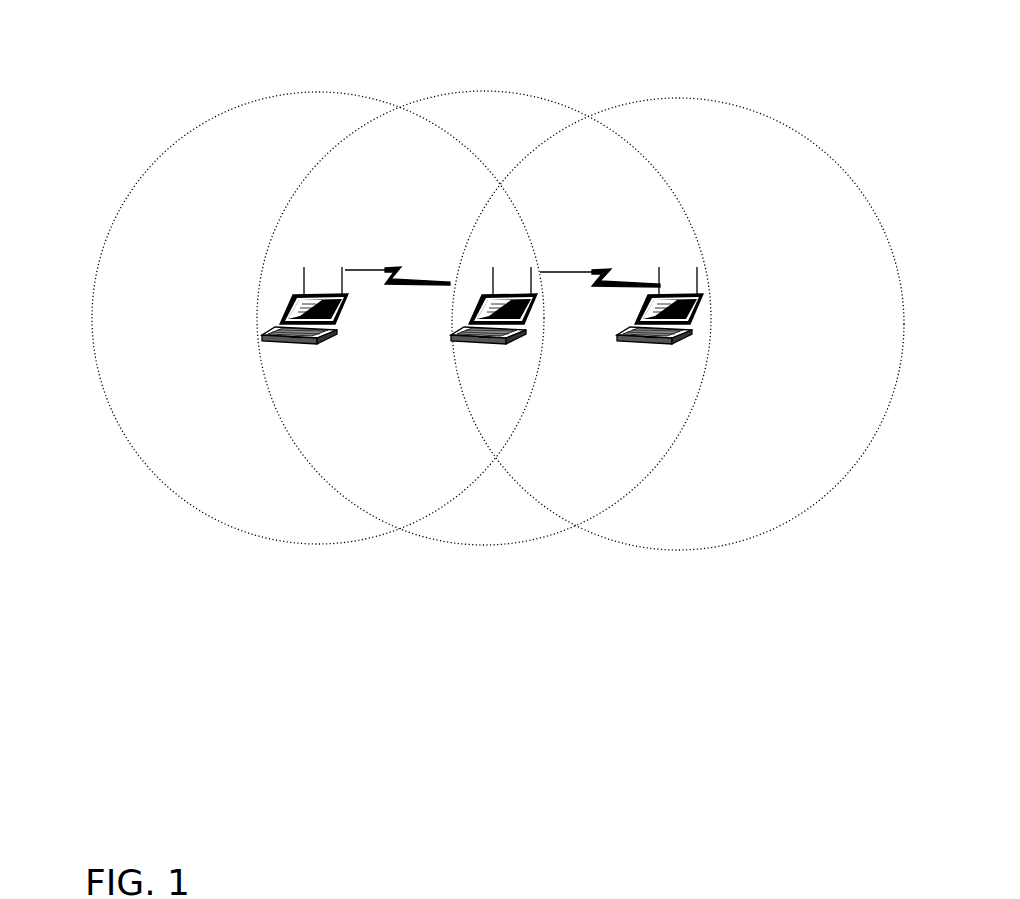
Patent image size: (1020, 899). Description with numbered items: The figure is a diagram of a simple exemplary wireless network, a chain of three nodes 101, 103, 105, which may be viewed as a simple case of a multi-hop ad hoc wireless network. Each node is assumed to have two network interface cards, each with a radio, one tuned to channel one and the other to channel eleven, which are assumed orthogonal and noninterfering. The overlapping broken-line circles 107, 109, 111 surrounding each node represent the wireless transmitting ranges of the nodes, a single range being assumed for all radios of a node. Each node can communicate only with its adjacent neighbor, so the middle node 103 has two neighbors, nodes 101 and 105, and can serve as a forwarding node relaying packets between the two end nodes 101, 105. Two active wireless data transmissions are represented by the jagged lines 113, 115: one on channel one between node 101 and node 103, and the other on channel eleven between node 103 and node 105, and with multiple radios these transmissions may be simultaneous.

The node 101 is at (290, 343).
The node 103 is at (478, 345).
The node 105 is at (638, 345).
The broken-line circle 107 is at (320, 92).
The broken-line circle 109 is at (483, 92).
The broken-line circle 111 is at (678, 98).
The jagged line 113 is at (393, 284).
The jagged line 115 is at (598, 286).